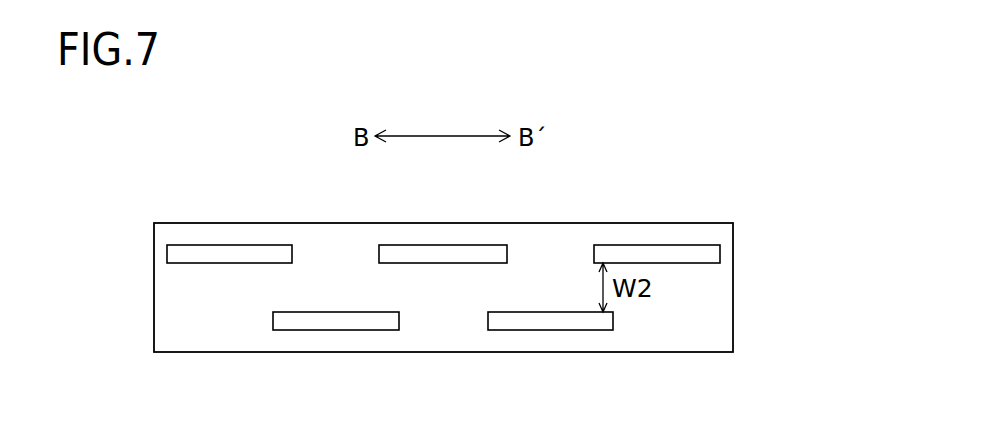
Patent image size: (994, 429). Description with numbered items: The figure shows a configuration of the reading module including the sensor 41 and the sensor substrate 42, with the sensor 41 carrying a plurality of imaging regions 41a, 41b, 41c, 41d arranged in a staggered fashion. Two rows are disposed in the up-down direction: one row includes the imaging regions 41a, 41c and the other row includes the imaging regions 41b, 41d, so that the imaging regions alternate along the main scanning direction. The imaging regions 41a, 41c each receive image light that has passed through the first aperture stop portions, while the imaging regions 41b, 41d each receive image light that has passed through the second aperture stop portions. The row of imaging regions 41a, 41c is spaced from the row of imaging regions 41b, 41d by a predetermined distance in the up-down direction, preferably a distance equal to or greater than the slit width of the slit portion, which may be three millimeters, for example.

The sensor 41 is at (737, 259).
The imaging region 41a is at (657, 255).
The imaging region 41b is at (552, 330).
The imaging region 41c is at (444, 253).
The imaging region 41d is at (337, 330).
The sensor substrate 42 is at (700, 222).